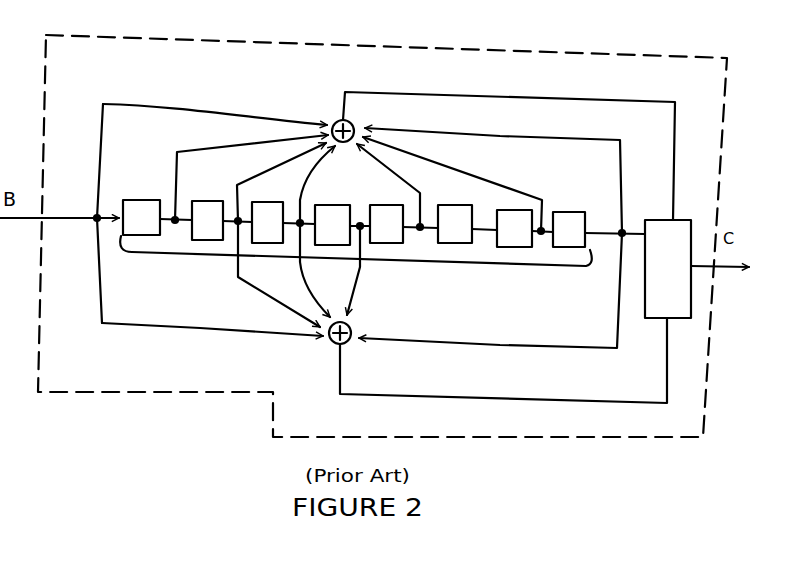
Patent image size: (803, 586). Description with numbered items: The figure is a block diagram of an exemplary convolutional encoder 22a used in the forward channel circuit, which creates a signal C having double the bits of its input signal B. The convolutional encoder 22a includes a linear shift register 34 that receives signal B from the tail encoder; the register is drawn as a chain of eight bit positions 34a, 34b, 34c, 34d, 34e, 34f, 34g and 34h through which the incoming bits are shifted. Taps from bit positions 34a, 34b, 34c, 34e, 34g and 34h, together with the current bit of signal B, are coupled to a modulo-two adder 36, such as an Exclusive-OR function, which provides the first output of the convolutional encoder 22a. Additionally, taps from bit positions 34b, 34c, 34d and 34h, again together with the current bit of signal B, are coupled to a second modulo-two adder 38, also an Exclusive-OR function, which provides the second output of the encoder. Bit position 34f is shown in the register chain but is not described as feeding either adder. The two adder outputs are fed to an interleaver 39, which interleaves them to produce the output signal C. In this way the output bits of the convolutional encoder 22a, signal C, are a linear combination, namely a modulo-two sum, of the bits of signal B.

The convolutional encoder 22a is at (223, 396).
The linear shift register 34 is at (382, 249).
The bit position 34a is at (141, 217).
The bit position 34b is at (207, 220).
The bit position 34c is at (267, 222).
The bit position 34d is at (332, 225).
The bit position 34e is at (386, 224).
The bit position 34f is at (455, 224).
The bit position 34g is at (514, 228).
The bit position 34h is at (569, 229).
The modulo-2 adder 36 is at (334, 120).
The modulo-2 adder 38 is at (326, 348).
The interleaver 39 is at (676, 221).